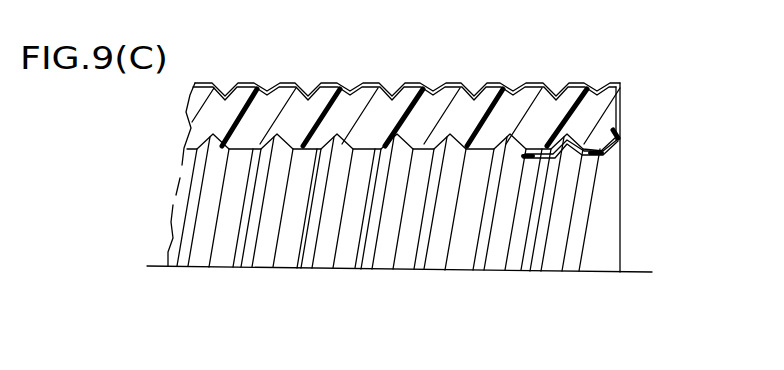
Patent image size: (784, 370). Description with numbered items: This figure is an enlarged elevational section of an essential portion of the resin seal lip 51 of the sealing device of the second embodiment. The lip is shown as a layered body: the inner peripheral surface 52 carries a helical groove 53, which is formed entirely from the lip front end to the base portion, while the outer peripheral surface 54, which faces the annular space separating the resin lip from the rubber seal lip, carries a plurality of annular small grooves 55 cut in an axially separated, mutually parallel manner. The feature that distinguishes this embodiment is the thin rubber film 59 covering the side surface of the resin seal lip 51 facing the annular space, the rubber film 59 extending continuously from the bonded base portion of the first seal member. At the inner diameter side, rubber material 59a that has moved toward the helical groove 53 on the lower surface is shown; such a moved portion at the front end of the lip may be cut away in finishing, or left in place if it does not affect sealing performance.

The resin seal lip 51 is at (618, 128).
The inner peripheral surface 52 is at (477, 153).
The helical groove 53 is at (572, 163).
The outer peripheral surface 54 is at (450, 90).
The annular small grooves 55 is at (553, 90).
The thin rubber film 59 is at (373, 83).
The rubber material 59a is at (555, 162).